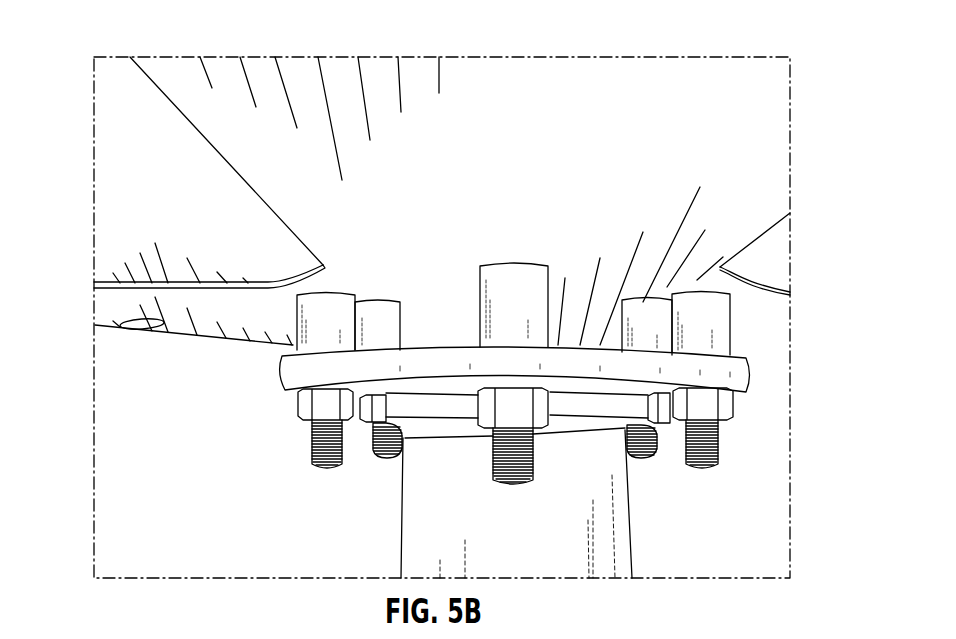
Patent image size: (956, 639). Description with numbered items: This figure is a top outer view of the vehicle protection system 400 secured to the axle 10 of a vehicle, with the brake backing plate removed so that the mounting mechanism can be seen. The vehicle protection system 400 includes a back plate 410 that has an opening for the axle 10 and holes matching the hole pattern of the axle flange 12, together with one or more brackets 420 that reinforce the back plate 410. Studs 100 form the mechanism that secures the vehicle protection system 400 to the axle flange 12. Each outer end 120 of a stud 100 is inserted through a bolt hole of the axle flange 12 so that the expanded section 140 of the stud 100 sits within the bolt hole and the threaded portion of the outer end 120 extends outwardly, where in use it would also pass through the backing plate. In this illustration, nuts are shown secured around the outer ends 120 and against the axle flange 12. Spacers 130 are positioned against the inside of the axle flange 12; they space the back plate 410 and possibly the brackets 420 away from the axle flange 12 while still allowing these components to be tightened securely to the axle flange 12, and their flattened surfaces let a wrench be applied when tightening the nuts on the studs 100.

The vehicle protection system 400 is at (718, 42).
The back plate 410 is at (126, 204).
The bracket 420 is at (118, 304).
The spacer 130 is at (732, 325).
The expanded section 140 is at (497, 345).
The axle flange 12 is at (748, 373).
The stud 100 is at (308, 430).
The outer end 120 is at (698, 472).
The axle 10 is at (618, 515).